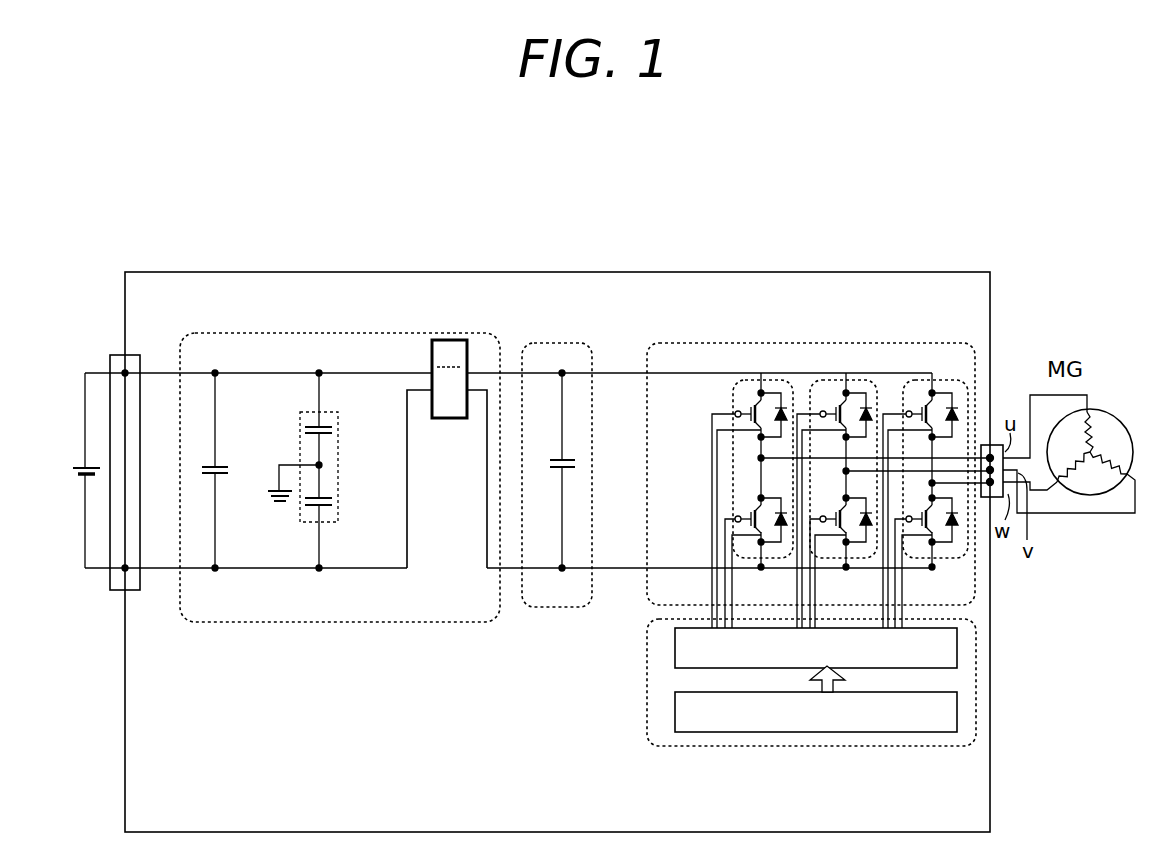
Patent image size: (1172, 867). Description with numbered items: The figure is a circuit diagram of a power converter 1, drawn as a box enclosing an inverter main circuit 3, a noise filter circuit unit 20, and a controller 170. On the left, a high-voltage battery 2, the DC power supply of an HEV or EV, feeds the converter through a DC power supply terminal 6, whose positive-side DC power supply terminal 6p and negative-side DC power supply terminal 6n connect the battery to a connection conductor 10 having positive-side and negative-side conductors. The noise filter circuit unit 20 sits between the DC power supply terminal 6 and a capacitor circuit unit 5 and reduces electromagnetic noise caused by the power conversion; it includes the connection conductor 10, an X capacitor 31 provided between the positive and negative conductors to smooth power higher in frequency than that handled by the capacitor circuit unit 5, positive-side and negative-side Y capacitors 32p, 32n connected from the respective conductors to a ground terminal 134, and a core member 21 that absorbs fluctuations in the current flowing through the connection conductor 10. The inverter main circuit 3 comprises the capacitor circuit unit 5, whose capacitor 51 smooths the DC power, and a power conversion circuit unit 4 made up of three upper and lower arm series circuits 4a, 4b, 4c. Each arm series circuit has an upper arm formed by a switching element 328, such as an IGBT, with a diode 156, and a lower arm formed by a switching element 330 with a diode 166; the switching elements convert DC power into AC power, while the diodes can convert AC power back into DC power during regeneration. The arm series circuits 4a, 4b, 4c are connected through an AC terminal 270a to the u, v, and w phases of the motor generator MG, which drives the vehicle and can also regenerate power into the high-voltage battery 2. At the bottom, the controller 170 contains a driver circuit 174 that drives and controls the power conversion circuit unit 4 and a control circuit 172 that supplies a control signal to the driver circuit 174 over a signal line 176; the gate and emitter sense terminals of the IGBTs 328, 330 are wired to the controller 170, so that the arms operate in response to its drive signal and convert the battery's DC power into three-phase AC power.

The power converter 1 is at (385, 272).
The high-voltage battery 2 is at (72, 460).
The inverter main circuit 3 is at (873, 188).
The power conversion circuit unit 4 is at (930, 235).
The upper and lower arm series circuit 4a is at (773, 377).
The upper and lower arm series circuit 4b is at (857, 377).
The upper and lower arm series circuit 4c is at (943, 377).
The capacitor circuit unit 5 is at (552, 342).
The DC power supply terminal 6 is at (110, 535).
The positive-side DC power supply terminal 6p is at (125, 373).
The negative-side DC power supply terminal 6n is at (125, 568).
The connection conductor 10 is at (200, 373).
The noise filter circuit unit 20 is at (350, 620).
The core member 21 is at (467, 345).
The X capacitor 31 is at (203, 466).
The positive-side Y capacitor 32p is at (327, 428).
The negative-side Y capacitor 32n is at (327, 505).
The capacitor 51 is at (560, 467).
The ground terminal 134 is at (293, 463).
The diode 156 is at (788, 418).
The diode 166 is at (783, 537).
The controller 170 is at (977, 660).
The control circuit 172 is at (675, 708).
The driver circuit 174 is at (675, 652).
The signal line 176 is at (833, 683).
The AC terminal 270a is at (992, 443).
The switching element 328 is at (750, 408).
The switching element 330 is at (762, 527).